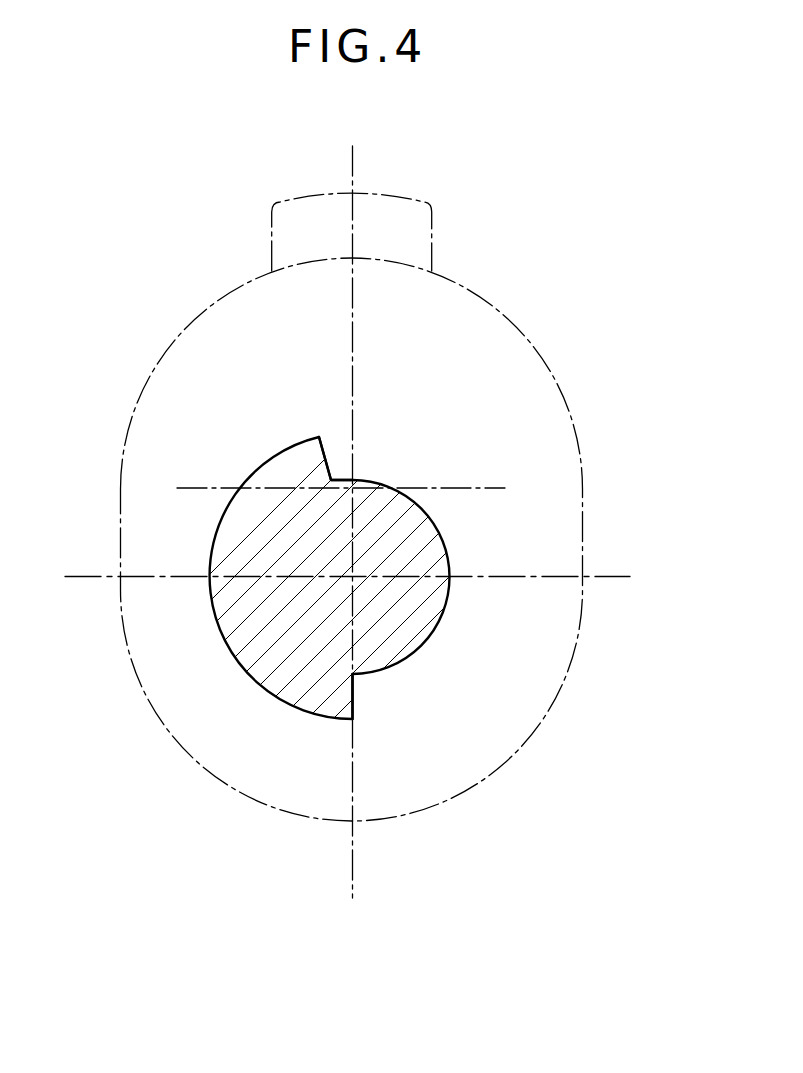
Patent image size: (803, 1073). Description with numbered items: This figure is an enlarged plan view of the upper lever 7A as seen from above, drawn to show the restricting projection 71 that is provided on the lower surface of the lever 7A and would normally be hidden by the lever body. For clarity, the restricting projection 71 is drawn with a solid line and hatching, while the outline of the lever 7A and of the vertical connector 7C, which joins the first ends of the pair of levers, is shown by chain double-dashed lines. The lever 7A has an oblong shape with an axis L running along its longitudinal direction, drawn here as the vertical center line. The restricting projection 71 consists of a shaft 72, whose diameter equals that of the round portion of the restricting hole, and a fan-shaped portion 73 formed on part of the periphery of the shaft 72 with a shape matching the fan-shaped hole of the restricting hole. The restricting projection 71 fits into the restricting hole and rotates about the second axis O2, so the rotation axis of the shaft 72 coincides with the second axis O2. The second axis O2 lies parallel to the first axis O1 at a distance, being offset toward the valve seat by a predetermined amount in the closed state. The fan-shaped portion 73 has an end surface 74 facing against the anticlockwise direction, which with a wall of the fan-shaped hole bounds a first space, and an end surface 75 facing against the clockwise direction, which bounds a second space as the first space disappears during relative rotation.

The upper lever 7A is at (458, 285).
The vertical connector 7C is at (414, 200).
The restricting projection 71 is at (401, 600).
The shaft 72 is at (340, 588).
The fan-shaped portion 73 is at (243, 656).
The end surface 74 is at (354, 704).
The end surface 75 is at (323, 452).
The first axis O1 is at (353, 489).
The second axis O2 is at (353, 577).
The axis L is at (354, 877).